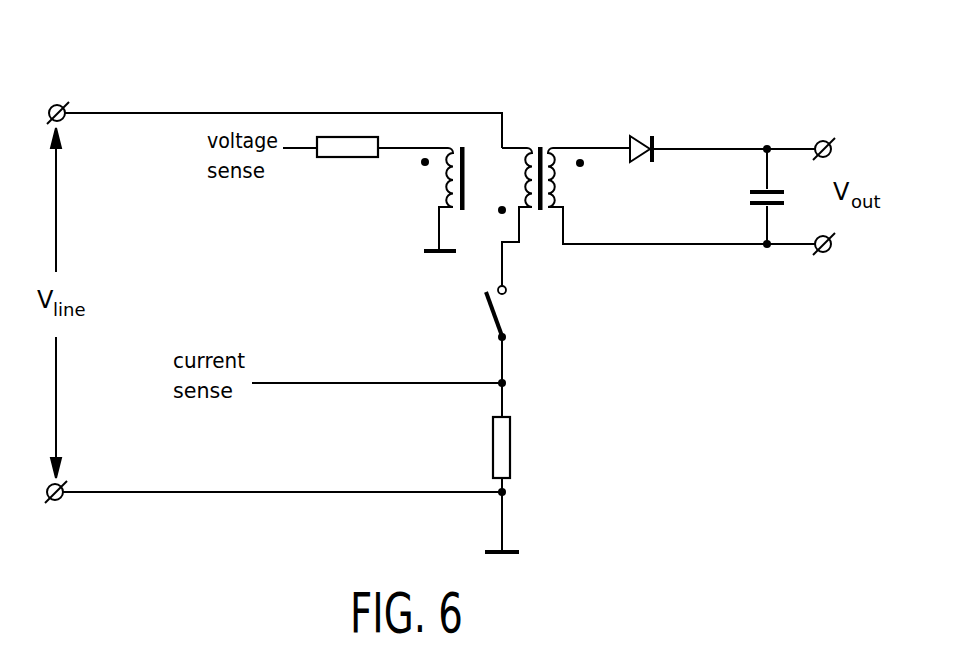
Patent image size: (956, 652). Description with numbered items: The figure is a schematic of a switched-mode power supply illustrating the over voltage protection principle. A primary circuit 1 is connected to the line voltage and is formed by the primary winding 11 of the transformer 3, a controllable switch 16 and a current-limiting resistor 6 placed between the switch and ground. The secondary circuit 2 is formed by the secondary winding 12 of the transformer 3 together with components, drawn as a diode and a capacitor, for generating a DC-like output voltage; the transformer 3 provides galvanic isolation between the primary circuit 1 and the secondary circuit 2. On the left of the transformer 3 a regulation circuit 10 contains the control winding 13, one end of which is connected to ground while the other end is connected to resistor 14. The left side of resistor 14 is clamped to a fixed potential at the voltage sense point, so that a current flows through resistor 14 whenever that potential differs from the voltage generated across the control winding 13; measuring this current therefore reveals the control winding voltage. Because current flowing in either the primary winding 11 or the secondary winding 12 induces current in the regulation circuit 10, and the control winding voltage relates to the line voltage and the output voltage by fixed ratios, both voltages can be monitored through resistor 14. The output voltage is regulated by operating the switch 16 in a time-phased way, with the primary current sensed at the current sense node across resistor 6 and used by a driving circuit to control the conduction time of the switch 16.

The primary circuit 1 is at (315, 113).
The secondary circuit 2 is at (703, 147).
The transformer 3 is at (505, 146).
The current sense resistor 6 is at (511, 440).
The regulation circuit 10 is at (406, 186).
The primary winding 11 is at (531, 215).
The secondary winding 12 is at (566, 205).
The control winding 13 is at (452, 212).
The resistor 14 is at (346, 160).
The controllable switch 16 is at (506, 338).